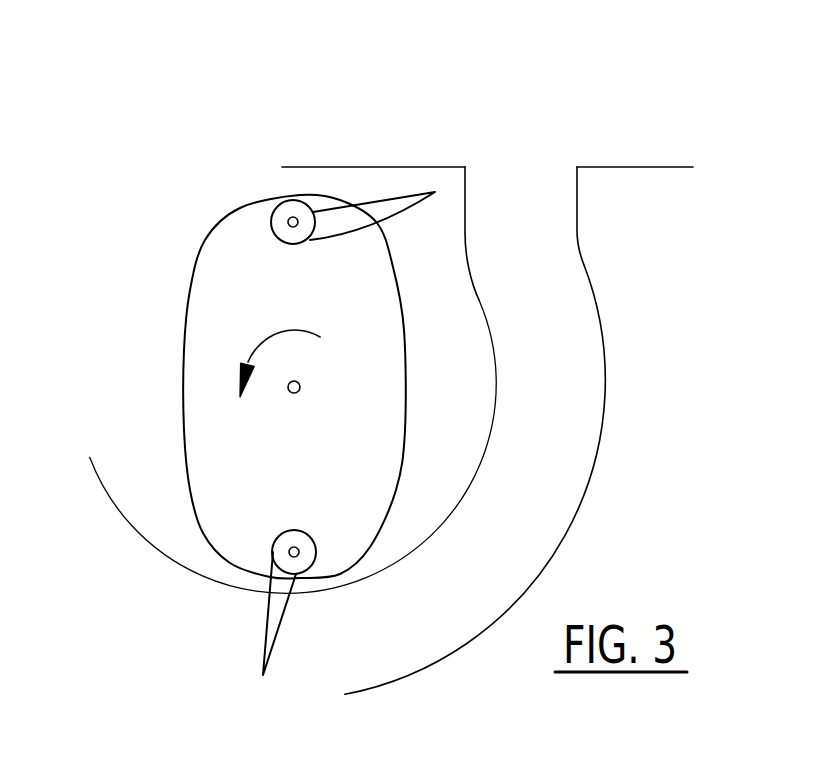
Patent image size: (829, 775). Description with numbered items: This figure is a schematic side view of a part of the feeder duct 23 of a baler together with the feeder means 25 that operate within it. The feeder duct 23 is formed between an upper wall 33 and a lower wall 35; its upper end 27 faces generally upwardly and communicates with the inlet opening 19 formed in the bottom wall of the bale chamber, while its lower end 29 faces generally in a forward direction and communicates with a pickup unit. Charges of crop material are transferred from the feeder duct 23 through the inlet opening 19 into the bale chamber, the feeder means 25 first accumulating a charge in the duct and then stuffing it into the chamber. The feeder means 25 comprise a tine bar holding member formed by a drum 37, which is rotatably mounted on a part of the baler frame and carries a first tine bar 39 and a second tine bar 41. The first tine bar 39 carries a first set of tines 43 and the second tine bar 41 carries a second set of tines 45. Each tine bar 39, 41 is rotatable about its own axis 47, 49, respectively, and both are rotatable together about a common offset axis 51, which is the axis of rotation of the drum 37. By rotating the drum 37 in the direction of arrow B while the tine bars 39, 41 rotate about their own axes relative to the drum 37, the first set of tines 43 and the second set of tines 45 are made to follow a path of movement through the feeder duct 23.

The inlet opening 19 is at (565, 158).
The feeder duct 23 is at (507, 529).
The feeder means 25 is at (80, 152).
The upper end 27 is at (538, 285).
The lower end 29 is at (208, 603).
The upper wall 33 is at (490, 343).
The lower wall 35 is at (604, 435).
The drum 37 is at (393, 268).
The first tine bar 39 is at (252, 240).
The second tine bar 41 is at (250, 500).
The first set of tines 43 is at (387, 203).
The second set of tines 45 is at (267, 617).
The axis 47 is at (288, 216).
The axis 49 is at (294, 544).
The common offset axis 51 is at (296, 381).